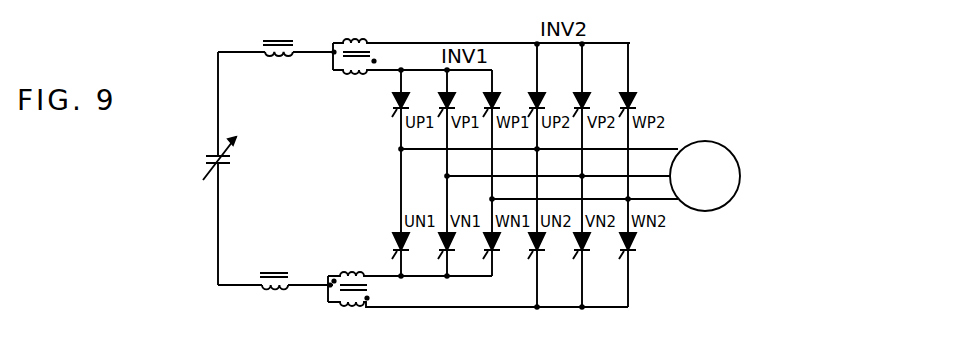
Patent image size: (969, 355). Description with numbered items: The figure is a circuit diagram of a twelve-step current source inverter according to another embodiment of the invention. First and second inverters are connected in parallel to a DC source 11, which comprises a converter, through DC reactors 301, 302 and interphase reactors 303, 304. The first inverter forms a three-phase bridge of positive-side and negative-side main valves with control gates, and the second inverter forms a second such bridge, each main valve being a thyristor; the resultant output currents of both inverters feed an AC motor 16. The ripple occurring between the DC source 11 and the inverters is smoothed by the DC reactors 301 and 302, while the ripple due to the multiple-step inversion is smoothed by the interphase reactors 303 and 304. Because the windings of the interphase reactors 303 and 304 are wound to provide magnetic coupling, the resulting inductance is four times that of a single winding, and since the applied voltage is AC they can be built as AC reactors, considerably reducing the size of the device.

The DC source 11 is at (206, 159).
The AC motor 16 is at (687, 143).
The DC reactor 301 is at (271, 40).
The DC reactor 302 is at (271, 272).
The interphase reactor 303 is at (357, 40).
The interphase reactor 304 is at (352, 306).